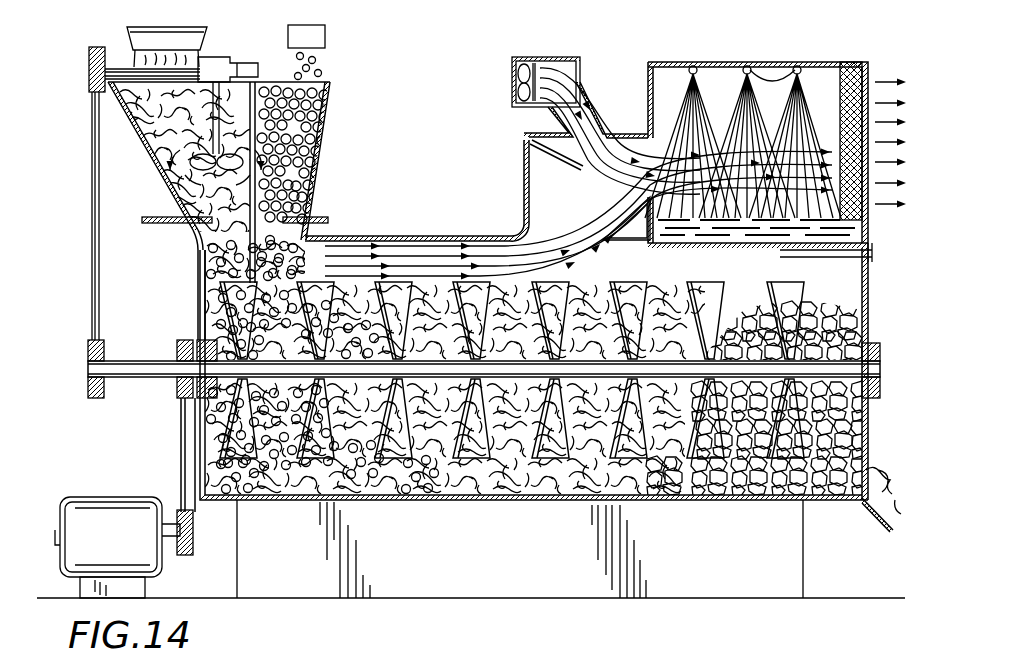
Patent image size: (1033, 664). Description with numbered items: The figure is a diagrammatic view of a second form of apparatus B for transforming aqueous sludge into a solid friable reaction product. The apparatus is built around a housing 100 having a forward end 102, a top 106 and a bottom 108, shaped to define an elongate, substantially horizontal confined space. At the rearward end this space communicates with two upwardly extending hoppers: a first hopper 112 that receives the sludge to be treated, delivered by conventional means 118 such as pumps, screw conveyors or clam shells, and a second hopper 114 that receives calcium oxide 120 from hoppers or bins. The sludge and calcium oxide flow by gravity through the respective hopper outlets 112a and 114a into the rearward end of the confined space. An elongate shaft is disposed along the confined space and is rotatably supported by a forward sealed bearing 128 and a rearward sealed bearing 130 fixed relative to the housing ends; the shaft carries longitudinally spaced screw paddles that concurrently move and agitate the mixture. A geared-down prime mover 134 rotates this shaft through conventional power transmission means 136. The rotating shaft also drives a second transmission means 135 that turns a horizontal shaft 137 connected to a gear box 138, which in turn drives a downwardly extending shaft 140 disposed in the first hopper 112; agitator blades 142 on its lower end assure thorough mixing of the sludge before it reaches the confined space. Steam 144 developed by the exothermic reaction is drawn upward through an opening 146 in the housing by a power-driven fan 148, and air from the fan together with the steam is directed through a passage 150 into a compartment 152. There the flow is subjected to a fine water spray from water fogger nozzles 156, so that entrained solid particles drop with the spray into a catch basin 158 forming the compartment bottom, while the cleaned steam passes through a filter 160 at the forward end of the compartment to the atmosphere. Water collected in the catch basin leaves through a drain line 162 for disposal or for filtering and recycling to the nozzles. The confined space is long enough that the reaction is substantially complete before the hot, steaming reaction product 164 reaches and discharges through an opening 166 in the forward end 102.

The housing 100 is at (432, 240).
The forward end 102 is at (868, 276).
The top 106 is at (338, 236).
The bottom 108 is at (258, 506).
The first hopper 112 is at (166, 163).
The hopper outlet 112a is at (182, 212).
The second hopper 114 is at (332, 104).
The pellet hopper outlet 114a is at (298, 200).
The conventional means 118 is at (128, 38).
The calcium oxide 120 is at (302, 142).
The forward sealed bearing 128 is at (866, 346).
The rearward sealed bearing 130 is at (200, 318).
The geared down prime mover 134 is at (140, 547).
The second transmission means 135 is at (92, 242).
The conventional power transmission means 136 is at (181, 456).
The horizontal shaft 137 is at (105, 78).
The gear box 138 is at (240, 48).
The downwardly extending shaft 140 is at (212, 110).
The agitator blades 142 is at (216, 150).
The steam 144 is at (596, 236).
The opening 146 is at (633, 242).
The power driven fan 148 is at (521, 108).
The passage 150 is at (628, 136).
The compartment 152 is at (812, 62).
The water fogger nozzles 156 is at (695, 64).
The catch basin 158 is at (718, 246).
The filter 160 is at (868, 88).
The drain line 162 is at (874, 258).
The reaction product 164 is at (846, 438).
The opening 166 is at (858, 474).
The second form of apparatus B is at (382, 234).